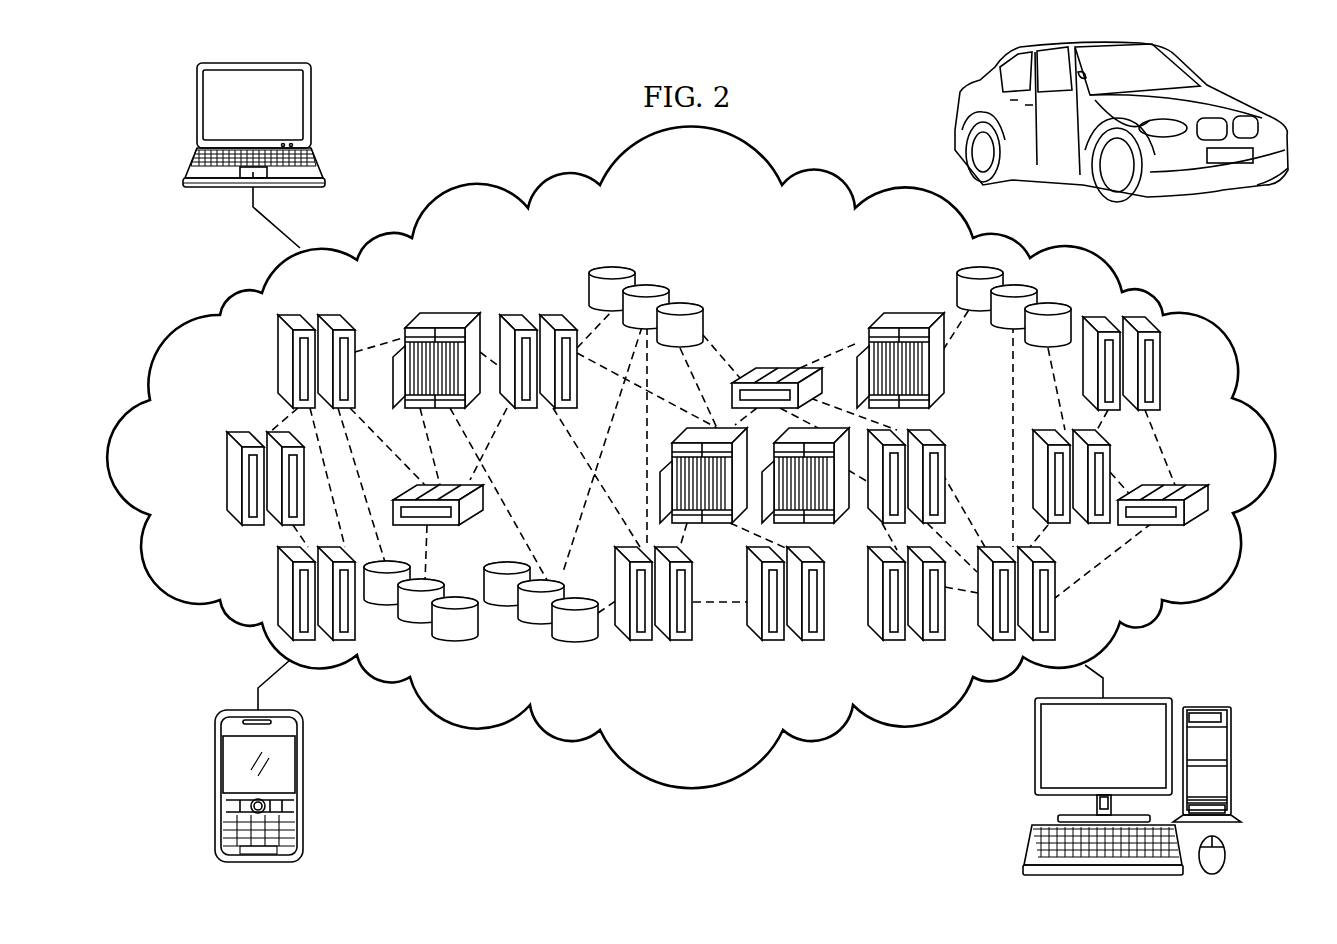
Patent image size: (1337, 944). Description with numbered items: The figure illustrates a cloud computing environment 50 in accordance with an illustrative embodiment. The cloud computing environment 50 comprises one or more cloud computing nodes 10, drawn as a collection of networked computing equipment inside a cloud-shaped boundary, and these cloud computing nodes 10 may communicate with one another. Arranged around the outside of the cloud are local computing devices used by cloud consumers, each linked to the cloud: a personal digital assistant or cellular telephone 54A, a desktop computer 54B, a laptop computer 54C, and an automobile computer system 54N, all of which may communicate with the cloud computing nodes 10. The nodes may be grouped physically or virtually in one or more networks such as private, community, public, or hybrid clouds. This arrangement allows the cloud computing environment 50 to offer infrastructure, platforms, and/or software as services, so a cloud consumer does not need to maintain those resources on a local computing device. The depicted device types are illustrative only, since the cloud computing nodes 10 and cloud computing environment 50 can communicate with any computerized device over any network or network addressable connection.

The cloud computing nodes 10 is at (519, 261).
The cloud computing environment 50 is at (690, 790).
The personal digital assistant (PDA) or cellular telephone 54A is at (214, 784).
The desktop computer 54B is at (1234, 834).
The laptop computer 54C is at (197, 108).
The automobile computer system 54N is at (1233, 102).